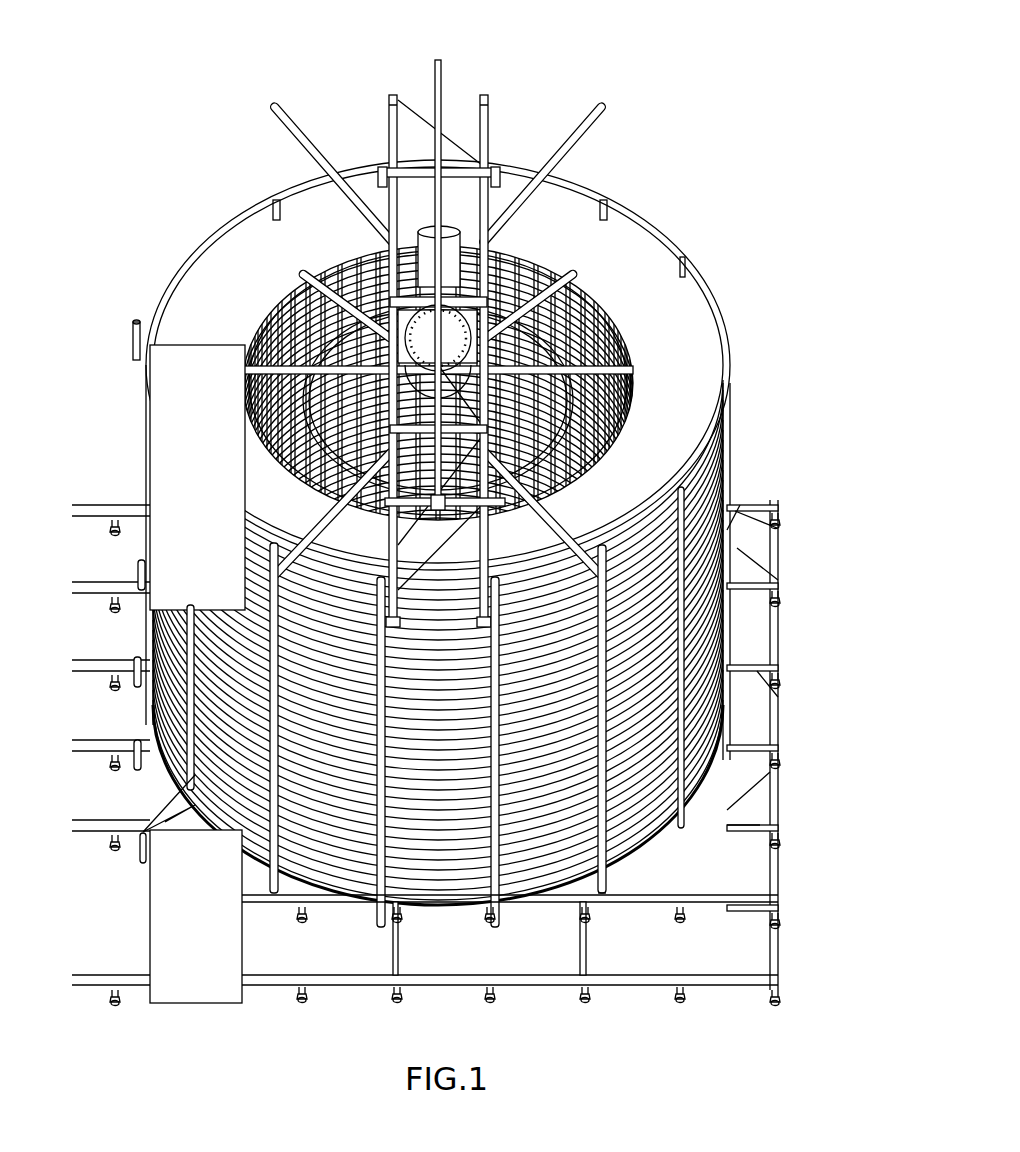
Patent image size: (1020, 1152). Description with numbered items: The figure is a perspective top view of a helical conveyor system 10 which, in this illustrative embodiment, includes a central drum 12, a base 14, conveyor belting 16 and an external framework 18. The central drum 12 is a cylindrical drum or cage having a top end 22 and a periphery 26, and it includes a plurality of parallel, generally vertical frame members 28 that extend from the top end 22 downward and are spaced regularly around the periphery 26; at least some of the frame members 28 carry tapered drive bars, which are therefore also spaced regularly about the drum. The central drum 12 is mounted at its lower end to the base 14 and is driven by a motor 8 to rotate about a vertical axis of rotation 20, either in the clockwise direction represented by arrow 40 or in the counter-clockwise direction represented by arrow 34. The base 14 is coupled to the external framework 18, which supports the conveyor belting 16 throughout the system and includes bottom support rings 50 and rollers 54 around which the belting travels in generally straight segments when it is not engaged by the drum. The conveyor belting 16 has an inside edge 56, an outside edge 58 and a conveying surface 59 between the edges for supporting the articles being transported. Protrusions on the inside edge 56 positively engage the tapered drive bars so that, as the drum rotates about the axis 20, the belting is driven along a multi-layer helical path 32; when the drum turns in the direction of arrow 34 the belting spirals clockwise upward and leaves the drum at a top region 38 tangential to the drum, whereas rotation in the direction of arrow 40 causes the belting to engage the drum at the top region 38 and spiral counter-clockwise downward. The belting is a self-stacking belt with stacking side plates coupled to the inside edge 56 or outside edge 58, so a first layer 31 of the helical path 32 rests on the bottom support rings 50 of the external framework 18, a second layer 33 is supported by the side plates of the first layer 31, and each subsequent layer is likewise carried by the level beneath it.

The motor 8 is at (427, 245).
The helical conveyor system 10 is at (658, 80).
The central drum 12 is at (617, 317).
The base 14 is at (753, 670).
The conveyor belting 16 is at (243, 610).
The external framework 18 is at (737, 548).
The vertical axis of rotation 20 is at (438, 65).
The top end 22 is at (633, 367).
The periphery 26 is at (633, 377).
The frame members 28 is at (637, 383).
The first layer 31 is at (603, 867).
The multi-layer helical path 32 is at (732, 525).
The second layer 33 is at (687, 808).
The arrow 34 is at (385, 55).
The top region 38 is at (247, 400).
The arrow 40 is at (492, 55).
The bottom support rings 50 is at (653, 842).
The rollers 54 is at (273, 893).
The inside edge 56 is at (243, 547).
The outside edge 58 is at (150, 457).
The conveying surface 59 is at (192, 513).